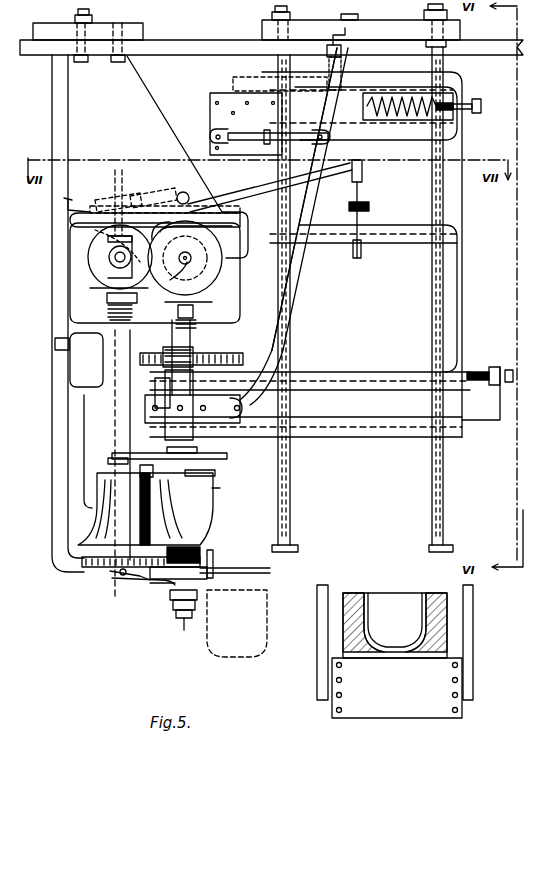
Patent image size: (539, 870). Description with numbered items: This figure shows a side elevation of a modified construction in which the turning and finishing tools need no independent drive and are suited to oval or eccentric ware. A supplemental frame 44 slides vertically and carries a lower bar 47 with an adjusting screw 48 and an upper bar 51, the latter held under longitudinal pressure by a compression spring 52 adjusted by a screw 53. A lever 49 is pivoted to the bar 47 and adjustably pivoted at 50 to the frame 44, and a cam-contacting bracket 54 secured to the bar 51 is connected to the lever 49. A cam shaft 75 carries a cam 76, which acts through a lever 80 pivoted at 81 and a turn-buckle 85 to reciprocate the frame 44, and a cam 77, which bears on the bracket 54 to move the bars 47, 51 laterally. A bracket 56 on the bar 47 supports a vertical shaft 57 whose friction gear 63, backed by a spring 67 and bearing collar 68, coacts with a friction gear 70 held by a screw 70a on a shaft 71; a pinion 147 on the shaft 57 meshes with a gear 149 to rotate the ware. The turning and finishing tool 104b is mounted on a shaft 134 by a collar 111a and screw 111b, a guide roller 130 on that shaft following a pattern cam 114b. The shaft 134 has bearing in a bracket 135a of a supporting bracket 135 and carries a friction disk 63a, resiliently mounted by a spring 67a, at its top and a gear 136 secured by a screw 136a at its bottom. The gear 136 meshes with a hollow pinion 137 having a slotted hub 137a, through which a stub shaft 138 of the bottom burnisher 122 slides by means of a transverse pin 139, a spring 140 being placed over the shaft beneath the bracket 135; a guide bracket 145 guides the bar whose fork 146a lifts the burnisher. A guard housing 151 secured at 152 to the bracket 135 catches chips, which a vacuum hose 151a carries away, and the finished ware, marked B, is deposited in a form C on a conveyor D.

The supplemental frame 44 is at (463, 218).
The bar 47 is at (486, 420).
The adjusting screw 48 is at (505, 368).
The lever 49 is at (298, 262).
The sliding block adjustment pivot 50 is at (327, 70).
The bar 51 is at (301, 226).
The compression spring 52 is at (397, 93).
The screw 53 is at (478, 102).
The cam-contacting member or bracket 54 is at (210, 133).
The supporting member or bracket 56 is at (247, 410).
The shaft 57 is at (205, 448).
The friction gear or disk 63 is at (198, 313).
The friction disk or gear 63a is at (93, 302).
The spring 67 is at (176, 322).
The spring 67a is at (106, 322).
The bearing collar 68 is at (280, 374).
The friction gear 70 is at (230, 275).
The screw 70a is at (80, 240).
The shaft 71 is at (103, 250).
The cam shaft 75 is at (171, 279).
The cam 76 is at (155, 201).
The cam 77 is at (190, 258).
The lever 80 is at (269, 209).
The sliding block adjustment pivot 81 is at (120, 202).
The turn-buckle 85 is at (370, 207).
The turning and finishing tool 104b is at (97, 505).
The collar 111a is at (140, 470).
The screw 111b is at (122, 458).
The pattern cam 114b is at (215, 458).
The burnisher 122 is at (222, 520).
The guide roller 130 is at (115, 435).
The shaft 134 is at (117, 410).
The supporting bracket 135 is at (145, 82).
The bracket 135a is at (155, 305).
The gear 136 is at (82, 562).
The screw 136a is at (120, 573).
The hollow pinion gear 137 is at (210, 545).
The slotted hub 137a is at (235, 572).
The stub shaft 138 is at (182, 627).
The transverse pin 139 is at (165, 583).
The spring 140 is at (170, 596).
The guide bracket 145 is at (55, 344).
The yoke or fork 146a is at (178, 606).
The pinion gear 147 is at (165, 348).
The gear 149 is at (191, 350).
The guard or housing 151 is at (200, 552).
The vacuum hose 151a is at (268, 570).
The securing point 152 is at (112, 578).
The mold B is at (237, 581).
The form C is at (437, 593).
The conveyor D is at (410, 712).